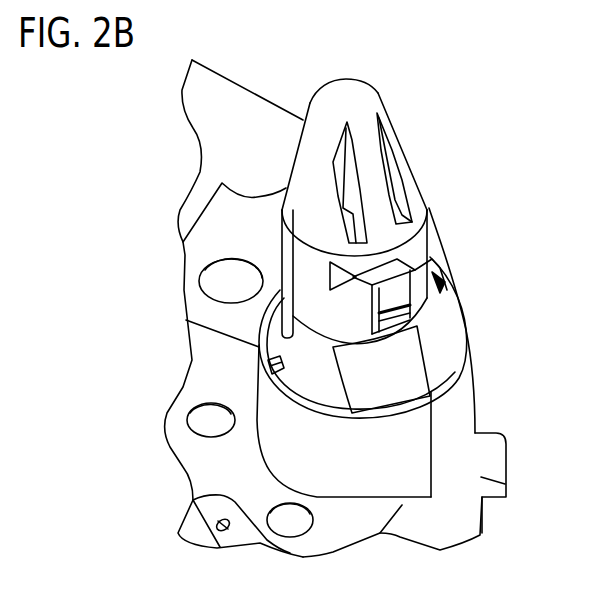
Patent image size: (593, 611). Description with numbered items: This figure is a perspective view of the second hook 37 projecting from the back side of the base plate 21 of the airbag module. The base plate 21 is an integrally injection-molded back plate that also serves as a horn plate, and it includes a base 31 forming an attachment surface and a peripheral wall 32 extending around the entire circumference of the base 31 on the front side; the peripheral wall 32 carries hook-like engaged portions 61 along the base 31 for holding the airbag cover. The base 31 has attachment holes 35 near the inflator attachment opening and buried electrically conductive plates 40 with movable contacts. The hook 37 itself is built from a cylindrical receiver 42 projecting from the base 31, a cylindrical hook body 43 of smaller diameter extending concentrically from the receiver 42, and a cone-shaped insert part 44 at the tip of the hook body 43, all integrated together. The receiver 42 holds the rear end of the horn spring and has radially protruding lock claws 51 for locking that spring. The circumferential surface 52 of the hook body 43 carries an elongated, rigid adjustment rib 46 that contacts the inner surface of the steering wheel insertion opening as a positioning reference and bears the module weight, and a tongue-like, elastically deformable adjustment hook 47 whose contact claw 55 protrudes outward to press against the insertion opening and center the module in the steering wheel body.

The base plate 21 is at (193, 473).
The base 31 is at (330, 549).
The peripheral wall 32 is at (448, 541).
The attachment holes 35 is at (216, 281).
The hook 37 is at (367, 76).
The electrically conductive plate 40 is at (203, 248).
The receiver 42 is at (423, 433).
The hook body 43 is at (433, 260).
The insert part 44 is at (403, 148).
The adjustment rib 46 is at (283, 292).
The adjustment hook 47 is at (406, 320).
The lock claws 51 is at (423, 368).
The circumferential surface 52 is at (431, 224).
The contact claw 55 is at (437, 278).
The engaged portions 61 is at (507, 491).